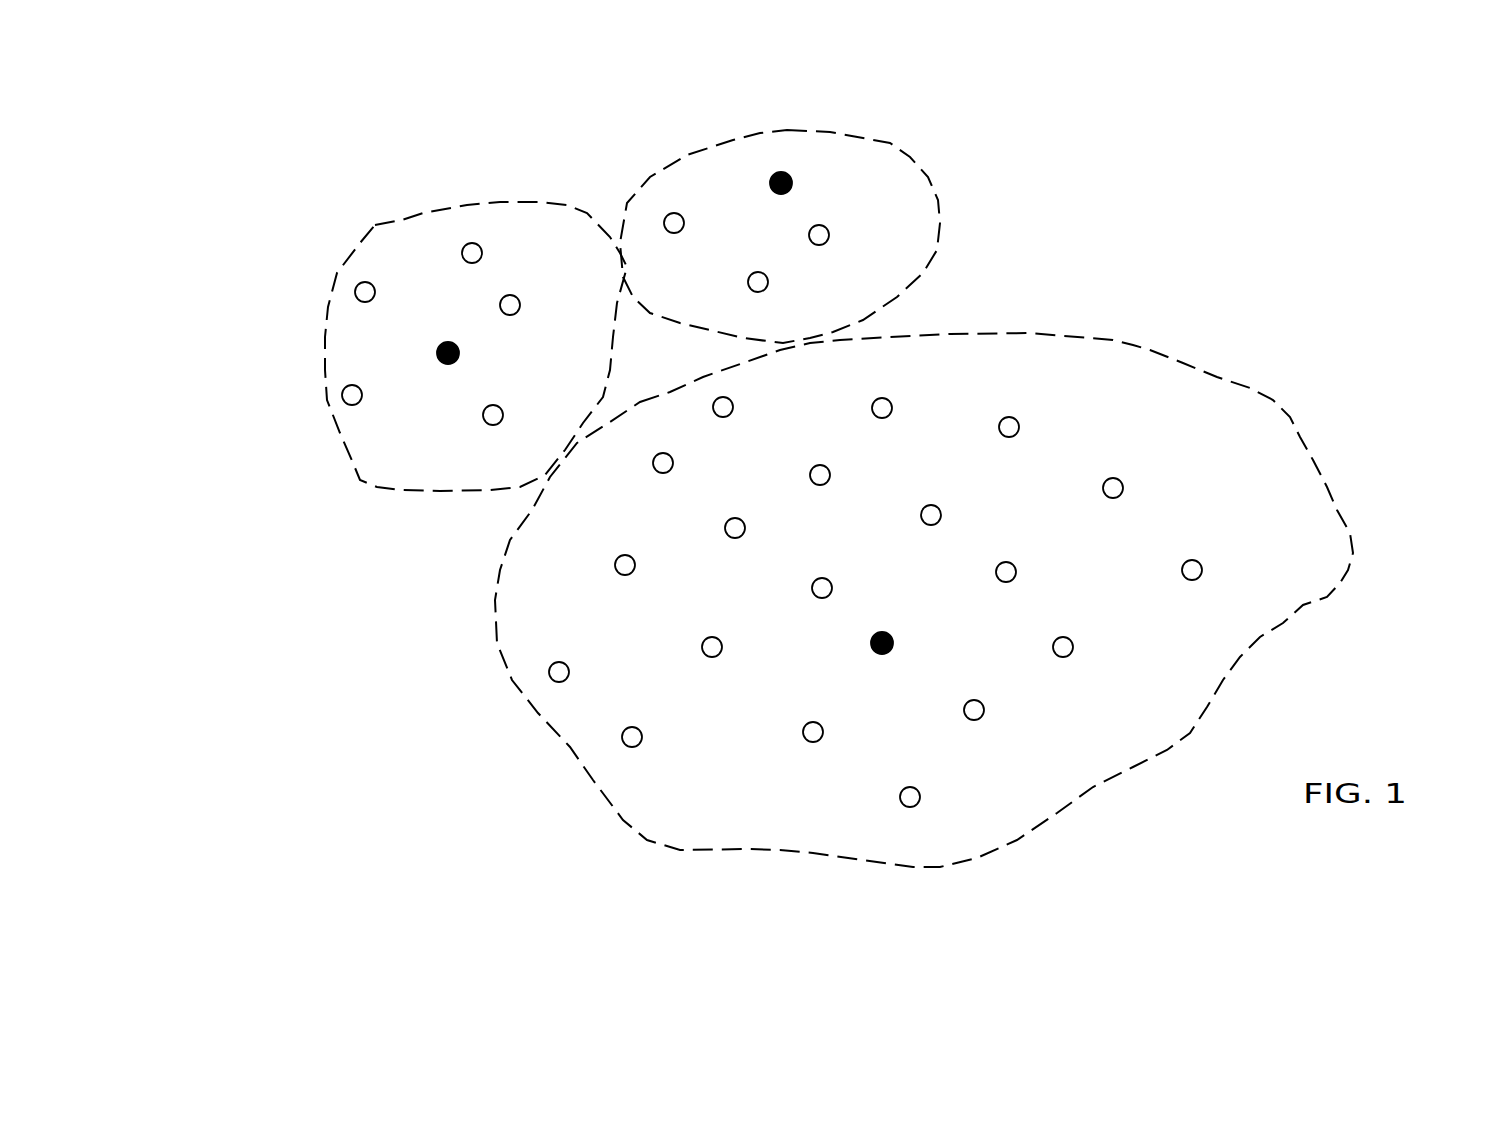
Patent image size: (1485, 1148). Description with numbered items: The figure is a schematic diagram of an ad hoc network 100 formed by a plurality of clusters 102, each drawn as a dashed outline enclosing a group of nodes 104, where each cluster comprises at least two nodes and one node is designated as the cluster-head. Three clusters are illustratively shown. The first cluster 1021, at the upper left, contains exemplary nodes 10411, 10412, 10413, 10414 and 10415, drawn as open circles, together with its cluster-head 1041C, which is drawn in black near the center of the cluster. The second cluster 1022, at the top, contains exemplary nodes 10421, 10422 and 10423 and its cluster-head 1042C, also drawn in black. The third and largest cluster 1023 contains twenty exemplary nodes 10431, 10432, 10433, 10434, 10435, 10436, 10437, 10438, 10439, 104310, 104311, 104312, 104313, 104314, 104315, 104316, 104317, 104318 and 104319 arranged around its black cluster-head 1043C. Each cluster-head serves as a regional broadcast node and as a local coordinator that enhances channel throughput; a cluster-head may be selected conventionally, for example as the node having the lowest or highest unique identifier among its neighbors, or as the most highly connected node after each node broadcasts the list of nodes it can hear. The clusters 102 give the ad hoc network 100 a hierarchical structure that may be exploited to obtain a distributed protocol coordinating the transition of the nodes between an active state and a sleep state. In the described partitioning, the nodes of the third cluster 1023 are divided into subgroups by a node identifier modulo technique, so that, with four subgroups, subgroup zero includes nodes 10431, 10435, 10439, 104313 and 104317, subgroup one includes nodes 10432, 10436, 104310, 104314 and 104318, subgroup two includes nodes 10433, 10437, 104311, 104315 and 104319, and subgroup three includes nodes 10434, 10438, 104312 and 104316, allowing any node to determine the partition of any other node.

The ad hoc network 100 is at (808, 482).
The cluster 102 is at (808, 482).
The first cluster 1021 is at (377, 232).
The second cluster 1022 is at (875, 142).
The third cluster 1023 is at (1152, 350).
The node 104 is at (824, 478).
The node 10411 is at (372, 285).
The node 10412 is at (479, 246).
The node 10413 is at (517, 298).
The node 10414 is at (500, 408).
The node 10415 is at (359, 388).
The cluster-head 1041C is at (455, 346).
The node 10421 is at (681, 216).
The node 10422 is at (765, 275).
The node 10423 is at (826, 228).
The cluster-head 1042C is at (788, 176).
The node 10431 is at (730, 400).
The node 10432 is at (670, 456).
The node 10433 is at (742, 521).
The node 10434 is at (827, 468).
The node 10435 is at (889, 401).
The node 10436 is at (632, 558).
The node 10437 is at (719, 640).
The node 10438 is at (639, 730).
The node 10439 is at (820, 725).
The node 104310 is at (566, 665).
The node 104311 is at (829, 581).
The node 104312 is at (938, 508).
The node 104313 is at (917, 790).
The node 104314 is at (1013, 565).
The node 104315 is at (1016, 420).
The node 104316 is at (1120, 481).
The node 104317 is at (1199, 563).
The node 104318 is at (1070, 640).
The node 104319 is at (981, 703).
The cluster-head 1043C is at (889, 636).